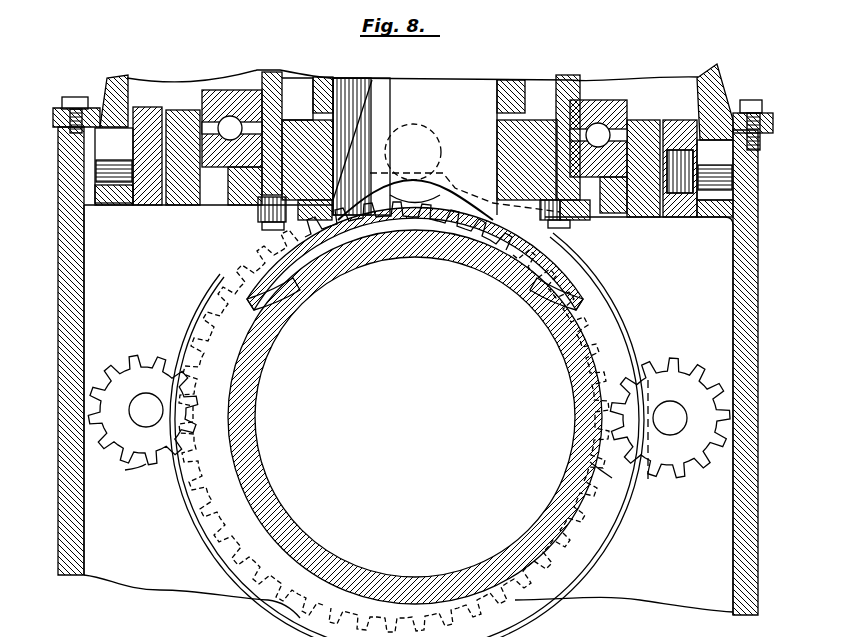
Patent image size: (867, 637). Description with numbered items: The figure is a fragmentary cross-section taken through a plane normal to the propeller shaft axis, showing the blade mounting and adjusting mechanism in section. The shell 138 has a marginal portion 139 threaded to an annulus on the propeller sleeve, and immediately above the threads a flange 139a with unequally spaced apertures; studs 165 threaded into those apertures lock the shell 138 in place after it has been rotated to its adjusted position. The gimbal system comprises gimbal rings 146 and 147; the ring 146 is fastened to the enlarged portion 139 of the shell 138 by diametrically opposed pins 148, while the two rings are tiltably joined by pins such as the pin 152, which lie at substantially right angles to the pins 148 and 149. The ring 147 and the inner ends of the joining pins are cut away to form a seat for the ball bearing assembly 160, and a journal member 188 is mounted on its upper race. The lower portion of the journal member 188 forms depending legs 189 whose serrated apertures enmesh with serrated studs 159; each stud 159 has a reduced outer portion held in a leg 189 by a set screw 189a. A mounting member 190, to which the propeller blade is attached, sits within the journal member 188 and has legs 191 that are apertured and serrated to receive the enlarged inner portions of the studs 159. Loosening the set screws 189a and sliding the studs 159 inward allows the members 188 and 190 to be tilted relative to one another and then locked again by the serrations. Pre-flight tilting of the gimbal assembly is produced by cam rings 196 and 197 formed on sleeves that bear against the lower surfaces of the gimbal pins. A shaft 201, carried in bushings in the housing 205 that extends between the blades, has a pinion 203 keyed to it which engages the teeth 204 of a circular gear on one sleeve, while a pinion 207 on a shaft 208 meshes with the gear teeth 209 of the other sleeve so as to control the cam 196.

The shell 138 is at (113, 82).
The marginal portion 139 is at (113, 126).
The flange 139a is at (762, 137).
The gimbal ring 146 is at (148, 110).
The gimbal ring 147 is at (182, 120).
The pin 148 is at (104, 207).
The pin 149 is at (716, 217).
The pin 152 is at (430, 150).
The serrated stud 159 is at (347, 100).
The ball bearing assembly 160 is at (224, 126).
The stud 165 is at (753, 117).
The journal member 188 is at (263, 82).
The leg 189 is at (258, 210).
The set screw 189a is at (268, 230).
The mounting member 190 is at (319, 96).
The leg 191 is at (332, 264).
The cam ring 196 is at (216, 513).
The cam ring 197 is at (622, 350).
The shaft 201 is at (148, 395).
The pinion 203 is at (140, 468).
The gear teeth 204 is at (433, 242).
The housing 205 is at (72, 548).
The pinion 207 is at (688, 478).
The shaft 208 is at (672, 412).
The gear teeth 209 is at (605, 470).